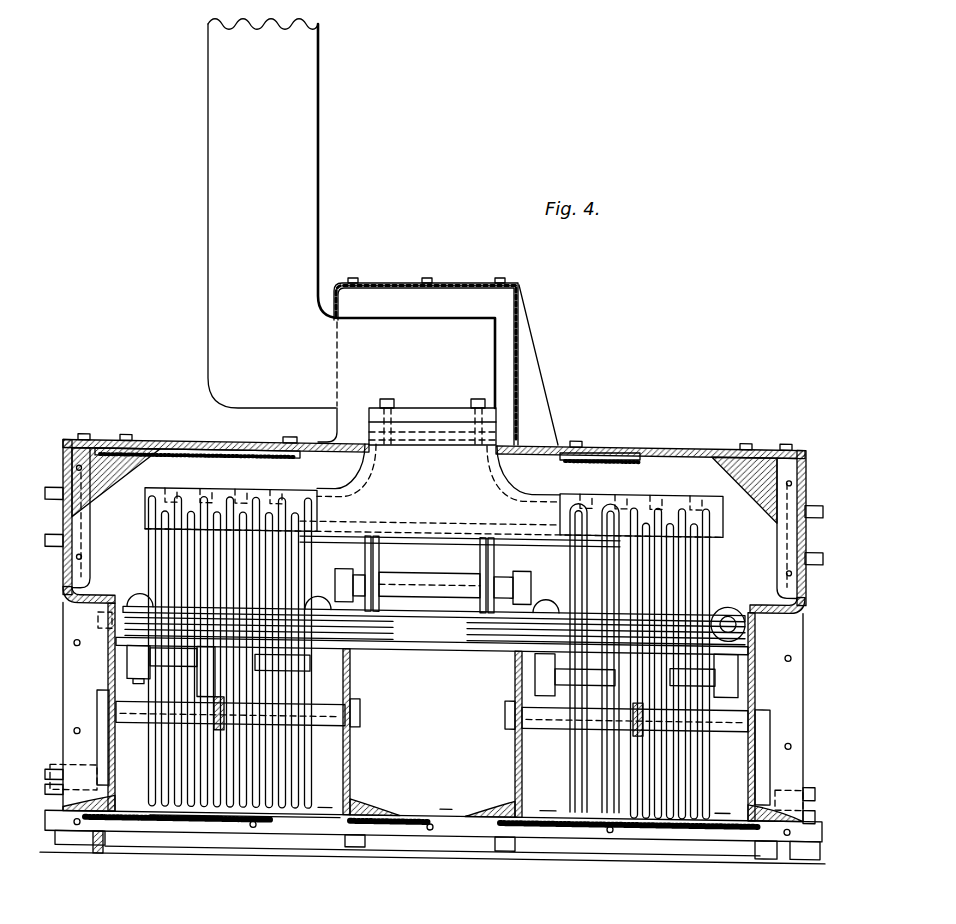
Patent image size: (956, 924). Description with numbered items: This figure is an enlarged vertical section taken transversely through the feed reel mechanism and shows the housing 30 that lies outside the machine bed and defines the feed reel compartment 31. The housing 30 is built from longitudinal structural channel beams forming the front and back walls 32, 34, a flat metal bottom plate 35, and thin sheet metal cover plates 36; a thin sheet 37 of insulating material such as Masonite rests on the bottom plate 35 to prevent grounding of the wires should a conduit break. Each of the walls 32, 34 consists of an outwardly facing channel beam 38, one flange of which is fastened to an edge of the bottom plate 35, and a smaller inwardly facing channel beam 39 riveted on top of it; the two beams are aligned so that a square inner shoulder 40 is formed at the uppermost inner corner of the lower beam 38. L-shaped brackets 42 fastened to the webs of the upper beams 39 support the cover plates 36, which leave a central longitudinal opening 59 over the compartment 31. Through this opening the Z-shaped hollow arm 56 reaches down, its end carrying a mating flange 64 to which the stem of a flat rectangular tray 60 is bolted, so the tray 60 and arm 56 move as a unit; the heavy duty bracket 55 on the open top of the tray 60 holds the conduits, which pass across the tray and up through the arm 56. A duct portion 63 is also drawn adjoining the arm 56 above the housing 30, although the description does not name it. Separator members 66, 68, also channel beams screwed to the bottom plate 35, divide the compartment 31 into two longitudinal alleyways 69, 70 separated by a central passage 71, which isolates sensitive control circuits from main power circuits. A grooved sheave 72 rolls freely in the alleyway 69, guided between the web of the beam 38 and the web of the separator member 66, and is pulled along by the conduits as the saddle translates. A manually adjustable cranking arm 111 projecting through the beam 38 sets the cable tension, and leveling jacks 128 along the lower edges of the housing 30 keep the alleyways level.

The housing 30 is at (734, 443).
The feed reel compartment 31 is at (599, 474).
The front wall 32 is at (806, 449).
The back wall 34 is at (65, 447).
The bottom plate 35 is at (235, 832).
The cover plates 36 is at (172, 435).
The sheet of insulating material 37 is at (285, 820).
The channel beam 38 is at (112, 800).
The channel beam 39 is at (88, 533).
The inner shoulder 40 is at (110, 597).
The L-shaped brackets 42 is at (686, 452).
The bracket 55 is at (269, 499).
The arm 56 is at (318, 222).
The central longitudinal opening 59 is at (335, 443).
The tray 60 is at (172, 487).
The duct 63 is at (524, 314).
The mating flange 64 is at (427, 418).
The separator member 66 is at (515, 766).
The separator member 68 is at (346, 768).
The alleyway 69 is at (722, 800).
The alleyway 70 is at (325, 797).
The central passage 71 is at (446, 797).
The sheave 72 is at (548, 820).
The cranking arm 111 is at (100, 732).
The leveling jacks 128 is at (95, 858).